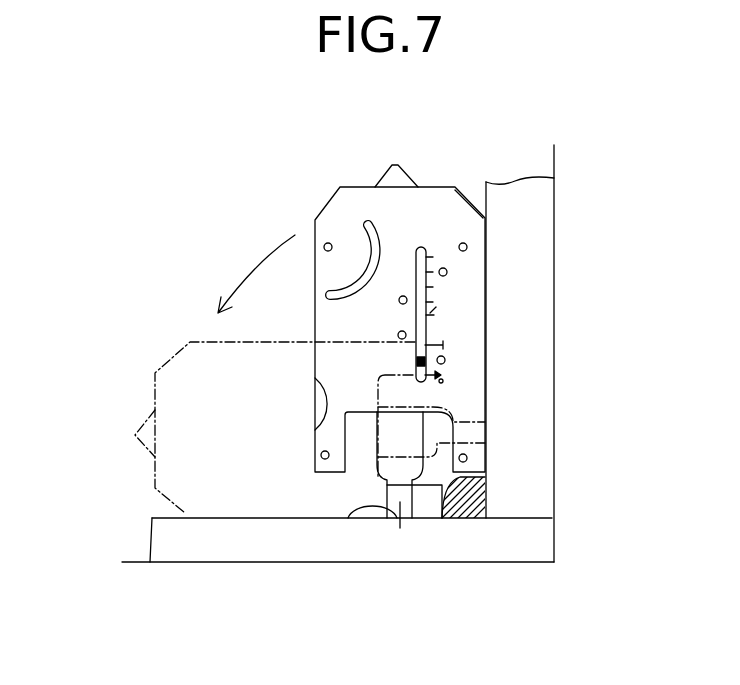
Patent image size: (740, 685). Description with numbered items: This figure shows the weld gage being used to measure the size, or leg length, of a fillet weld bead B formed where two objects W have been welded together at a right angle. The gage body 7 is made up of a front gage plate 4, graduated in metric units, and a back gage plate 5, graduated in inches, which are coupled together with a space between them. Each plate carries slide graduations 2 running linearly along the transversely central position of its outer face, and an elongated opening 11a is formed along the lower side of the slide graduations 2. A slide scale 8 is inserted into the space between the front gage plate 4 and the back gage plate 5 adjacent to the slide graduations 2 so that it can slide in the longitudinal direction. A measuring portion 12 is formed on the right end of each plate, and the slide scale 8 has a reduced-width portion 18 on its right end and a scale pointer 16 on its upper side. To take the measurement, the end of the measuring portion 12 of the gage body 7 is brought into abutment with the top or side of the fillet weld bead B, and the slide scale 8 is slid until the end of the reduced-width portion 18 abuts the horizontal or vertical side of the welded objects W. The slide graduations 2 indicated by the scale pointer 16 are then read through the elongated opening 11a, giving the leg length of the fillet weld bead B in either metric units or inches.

The gage body 7 is at (350, 184).
The slide scale 8 is at (408, 176).
The front gage plate 4 is at (521, 143).
The back gage plate 5 is at (457, 215).
The elongated opening 11a is at (417, 265).
The slide graduations 2 is at (432, 315).
The scale pointer 16 is at (445, 354).
The measuring portion 12 is at (347, 443).
The reduced-width portion 18 is at (400, 510).
The welded object W is at (527, 233).
The fillet weld bead B is at (473, 520).